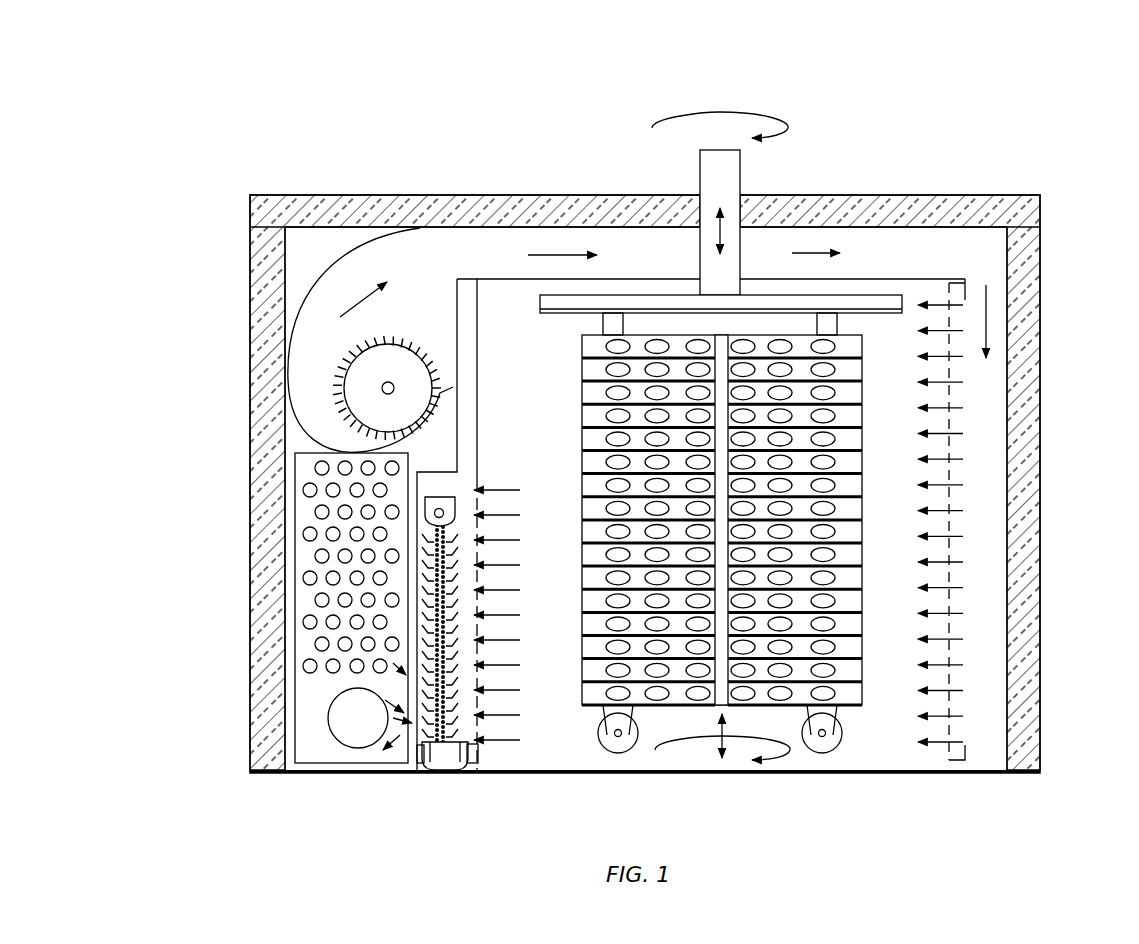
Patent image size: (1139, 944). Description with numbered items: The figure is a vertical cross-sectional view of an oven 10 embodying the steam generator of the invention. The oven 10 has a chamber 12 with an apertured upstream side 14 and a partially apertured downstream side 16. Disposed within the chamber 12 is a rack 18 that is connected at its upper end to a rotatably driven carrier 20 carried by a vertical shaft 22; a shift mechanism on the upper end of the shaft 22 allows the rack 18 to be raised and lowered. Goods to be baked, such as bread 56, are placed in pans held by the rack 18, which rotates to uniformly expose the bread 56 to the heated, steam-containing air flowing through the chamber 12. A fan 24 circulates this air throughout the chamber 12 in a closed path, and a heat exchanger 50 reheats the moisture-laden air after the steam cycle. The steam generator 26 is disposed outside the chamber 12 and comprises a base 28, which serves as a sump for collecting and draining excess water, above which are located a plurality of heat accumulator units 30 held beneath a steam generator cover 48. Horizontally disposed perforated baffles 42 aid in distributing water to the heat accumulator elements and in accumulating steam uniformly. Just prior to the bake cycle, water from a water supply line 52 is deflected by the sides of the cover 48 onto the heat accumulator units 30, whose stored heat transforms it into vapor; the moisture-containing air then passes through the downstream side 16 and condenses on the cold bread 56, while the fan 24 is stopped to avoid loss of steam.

The oven 10 is at (893, 152).
The chamber 12 is at (882, 745).
The apertured upstream side 14 is at (950, 473).
The partially apertured downstream side 16 is at (478, 757).
The rack 18 is at (858, 627).
The rotatably driven carrier 20 is at (862, 300).
The vertical shaft 22 is at (698, 180).
The fan 24 is at (327, 396).
The steam generator 26 is at (464, 607).
The base 28 is at (437, 772).
The heat accumulator units 30 is at (463, 732).
The baffles 42 is at (420, 744).
The steam generator cover 48 is at (436, 497).
The heat exchanger 50 is at (317, 600).
The water supply line 52 is at (442, 508).
The bread 56 is at (862, 392).